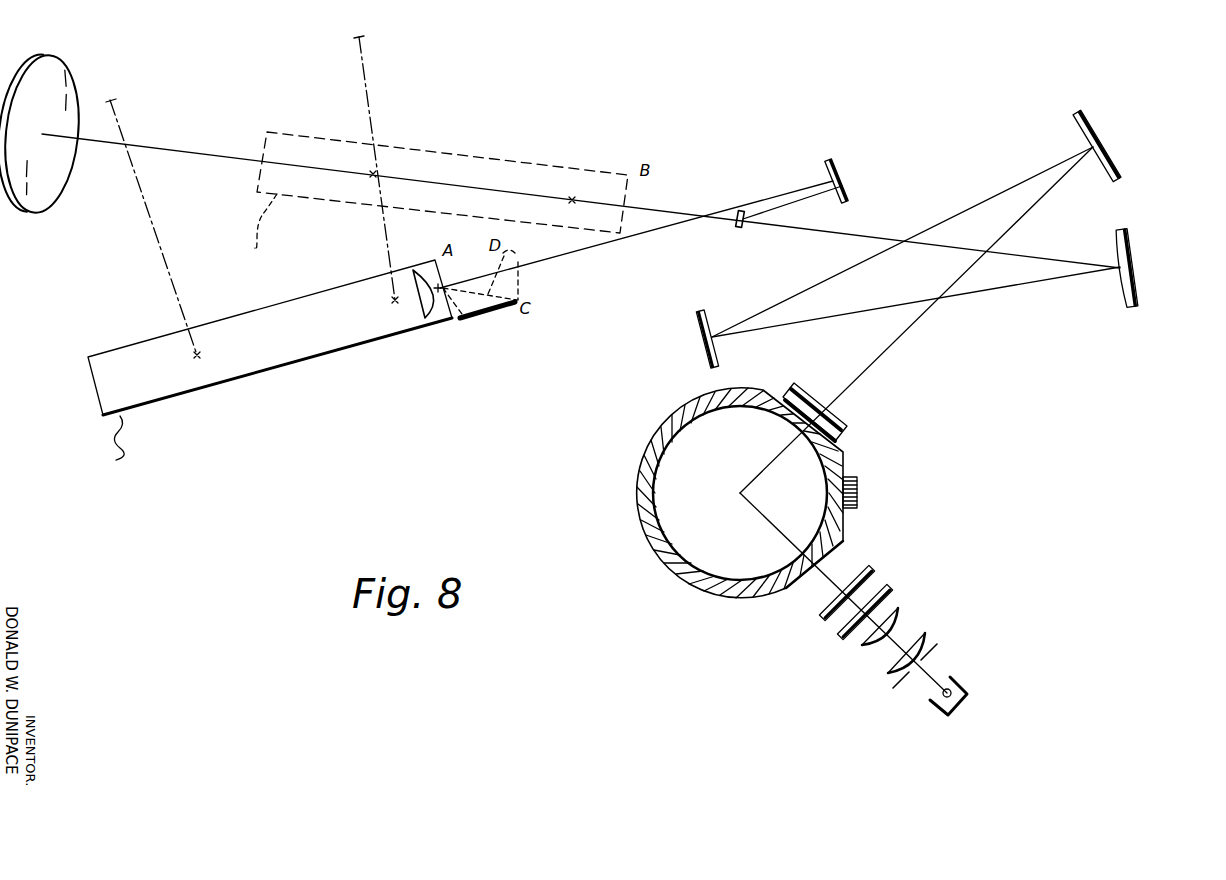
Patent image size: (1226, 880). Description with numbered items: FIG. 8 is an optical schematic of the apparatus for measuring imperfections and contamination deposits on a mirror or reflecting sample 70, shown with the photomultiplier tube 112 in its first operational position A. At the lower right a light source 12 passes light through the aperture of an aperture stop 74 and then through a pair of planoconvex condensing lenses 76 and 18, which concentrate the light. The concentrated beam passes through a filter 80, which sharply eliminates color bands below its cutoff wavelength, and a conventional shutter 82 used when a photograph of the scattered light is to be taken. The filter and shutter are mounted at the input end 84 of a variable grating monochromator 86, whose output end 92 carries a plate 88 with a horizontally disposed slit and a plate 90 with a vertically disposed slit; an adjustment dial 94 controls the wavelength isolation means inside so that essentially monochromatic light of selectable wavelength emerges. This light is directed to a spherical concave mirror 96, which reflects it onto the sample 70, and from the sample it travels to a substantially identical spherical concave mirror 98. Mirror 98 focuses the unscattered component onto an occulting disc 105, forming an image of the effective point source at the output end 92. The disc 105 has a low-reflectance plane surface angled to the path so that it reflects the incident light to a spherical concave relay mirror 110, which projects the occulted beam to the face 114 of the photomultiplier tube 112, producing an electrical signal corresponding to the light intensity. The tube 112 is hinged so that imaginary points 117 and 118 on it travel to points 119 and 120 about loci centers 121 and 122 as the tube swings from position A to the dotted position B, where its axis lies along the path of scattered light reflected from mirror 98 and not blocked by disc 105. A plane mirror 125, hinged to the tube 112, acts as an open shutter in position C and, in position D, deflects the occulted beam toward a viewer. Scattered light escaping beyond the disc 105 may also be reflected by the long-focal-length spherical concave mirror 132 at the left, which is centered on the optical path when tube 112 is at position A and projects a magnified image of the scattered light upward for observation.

The spherical concave mirror 132 is at (52, 196).
The loci center 121 is at (113, 100).
The loci center 122 is at (356, 38).
The point 119 is at (373, 173).
The point 120 is at (574, 198).
The imaginary point 117 is at (198, 356).
The imaginary point 118 is at (394, 302).
The photomultiplier tube 112 is at (270, 343).
The face 114 is at (426, 318).
The plane mirror 125 is at (492, 313).
The occulting disc 105 is at (736, 228).
The spherical concave relay mirror 110 is at (850, 187).
The spherical concave mirror 96 is at (1118, 171).
The spherical concave mirror 98 is at (1134, 296).
The mirror or reflecting sample 70 is at (702, 336).
The variable type monochromator 86 is at (682, 516).
The input end 84 is at (782, 596).
The output end 92 is at (796, 388).
The plate 90 is at (854, 437).
The plate 88 is at (788, 421).
The adjustment dial 94 is at (858, 491).
The shutter 82 is at (875, 570).
The filter 80 is at (891, 592).
The lens 18 is at (867, 655).
The planoconvex condensing lens 76 is at (892, 668).
The aperture stop 74 is at (942, 647).
The detector 12 is at (942, 710).